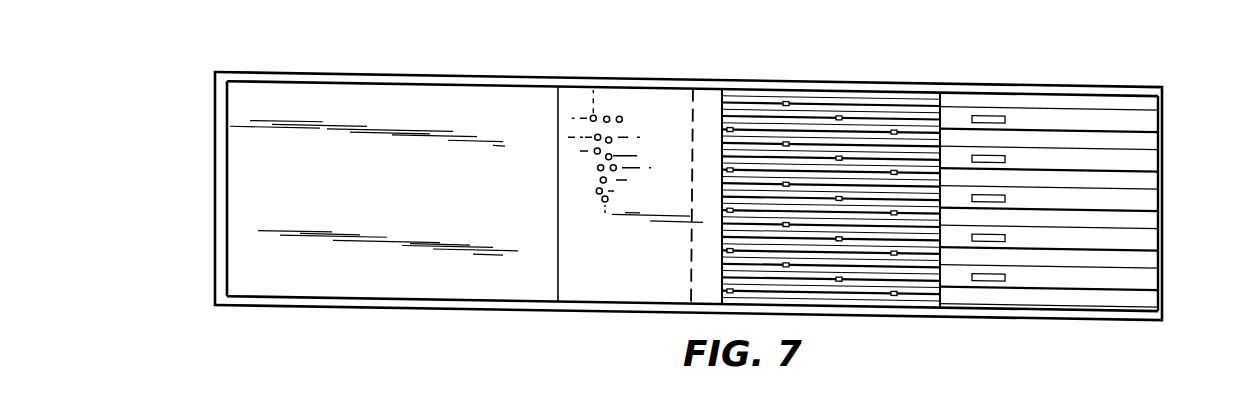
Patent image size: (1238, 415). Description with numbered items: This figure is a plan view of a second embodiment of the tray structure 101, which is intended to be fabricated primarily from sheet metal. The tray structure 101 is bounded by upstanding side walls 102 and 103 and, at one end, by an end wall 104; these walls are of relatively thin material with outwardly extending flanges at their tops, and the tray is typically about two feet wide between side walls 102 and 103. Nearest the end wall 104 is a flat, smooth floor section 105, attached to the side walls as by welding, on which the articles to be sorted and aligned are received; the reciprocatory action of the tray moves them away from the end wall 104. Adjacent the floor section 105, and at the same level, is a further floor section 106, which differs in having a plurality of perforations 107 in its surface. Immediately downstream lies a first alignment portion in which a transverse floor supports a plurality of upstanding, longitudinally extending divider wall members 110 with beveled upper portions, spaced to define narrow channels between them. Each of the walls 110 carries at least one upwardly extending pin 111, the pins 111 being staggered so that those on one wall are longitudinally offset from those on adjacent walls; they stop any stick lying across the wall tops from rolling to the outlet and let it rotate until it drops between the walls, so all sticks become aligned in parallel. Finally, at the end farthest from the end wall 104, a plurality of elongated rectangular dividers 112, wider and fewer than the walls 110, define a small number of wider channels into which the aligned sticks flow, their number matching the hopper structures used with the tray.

The tray structure 101 is at (211, 257).
The side wall 102 is at (445, 84).
The side wall 103 is at (393, 296).
The end wall 104 is at (217, 165).
The floor section 105 is at (435, 180).
The floor section 106 is at (629, 248).
The perforations 107 is at (596, 116).
The divider wall members 110 is at (797, 135).
The pin 111 is at (892, 134).
The dividers 112 is at (1120, 163).